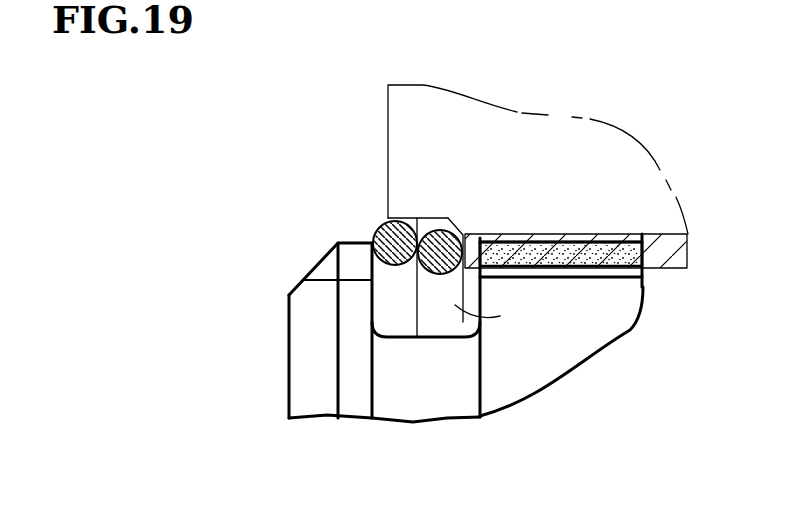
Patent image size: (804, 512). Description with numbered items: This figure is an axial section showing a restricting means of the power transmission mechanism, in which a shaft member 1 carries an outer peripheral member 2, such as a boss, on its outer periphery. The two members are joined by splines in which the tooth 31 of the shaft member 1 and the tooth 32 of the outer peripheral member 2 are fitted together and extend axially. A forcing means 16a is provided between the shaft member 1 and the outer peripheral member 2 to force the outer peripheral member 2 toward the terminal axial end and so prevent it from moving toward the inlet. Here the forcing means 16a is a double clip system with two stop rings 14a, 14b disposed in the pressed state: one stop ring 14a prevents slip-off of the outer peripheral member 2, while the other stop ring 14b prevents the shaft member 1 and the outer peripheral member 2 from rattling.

The shaft member 1 is at (572, 378).
The outer peripheral member 2 is at (637, 131).
The stop ring 14a is at (436, 228).
The stop ring 14b is at (377, 228).
The forcing means 16a is at (459, 231).
The tooth of the shaft member 31 is at (646, 264).
The tooth of the outer peripheral member 32 is at (673, 245).